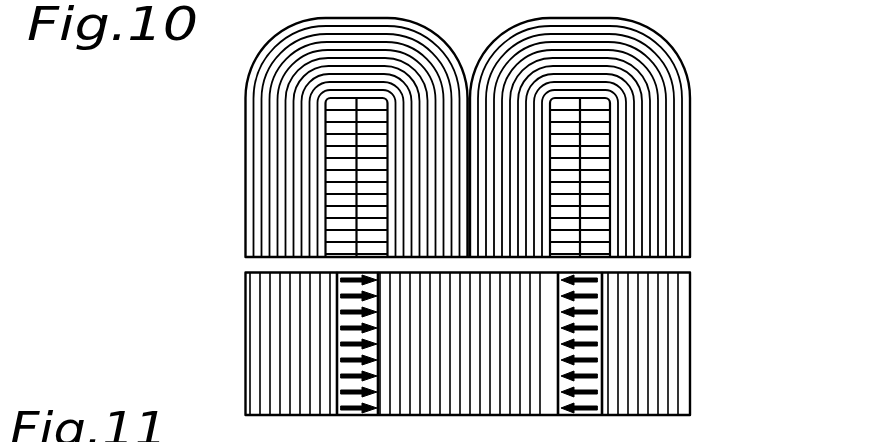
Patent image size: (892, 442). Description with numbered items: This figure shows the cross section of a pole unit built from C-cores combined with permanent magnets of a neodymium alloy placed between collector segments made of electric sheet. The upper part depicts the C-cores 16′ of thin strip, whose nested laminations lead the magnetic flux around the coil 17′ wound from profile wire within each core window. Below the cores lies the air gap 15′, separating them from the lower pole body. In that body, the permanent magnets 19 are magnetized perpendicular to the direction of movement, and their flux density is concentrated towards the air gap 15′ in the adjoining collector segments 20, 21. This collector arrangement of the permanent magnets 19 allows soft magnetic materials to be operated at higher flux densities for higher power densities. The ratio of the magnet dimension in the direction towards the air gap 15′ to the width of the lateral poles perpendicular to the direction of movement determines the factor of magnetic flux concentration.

The air gap 15′ is at (678, 265).
The core laminations 16′ is at (655, 207).
The coil winding 17′ is at (580, 170).
The permanent magnets 19 is at (588, 287).
The collector segment 20 is at (523, 328).
The collector segment 21 is at (652, 397).